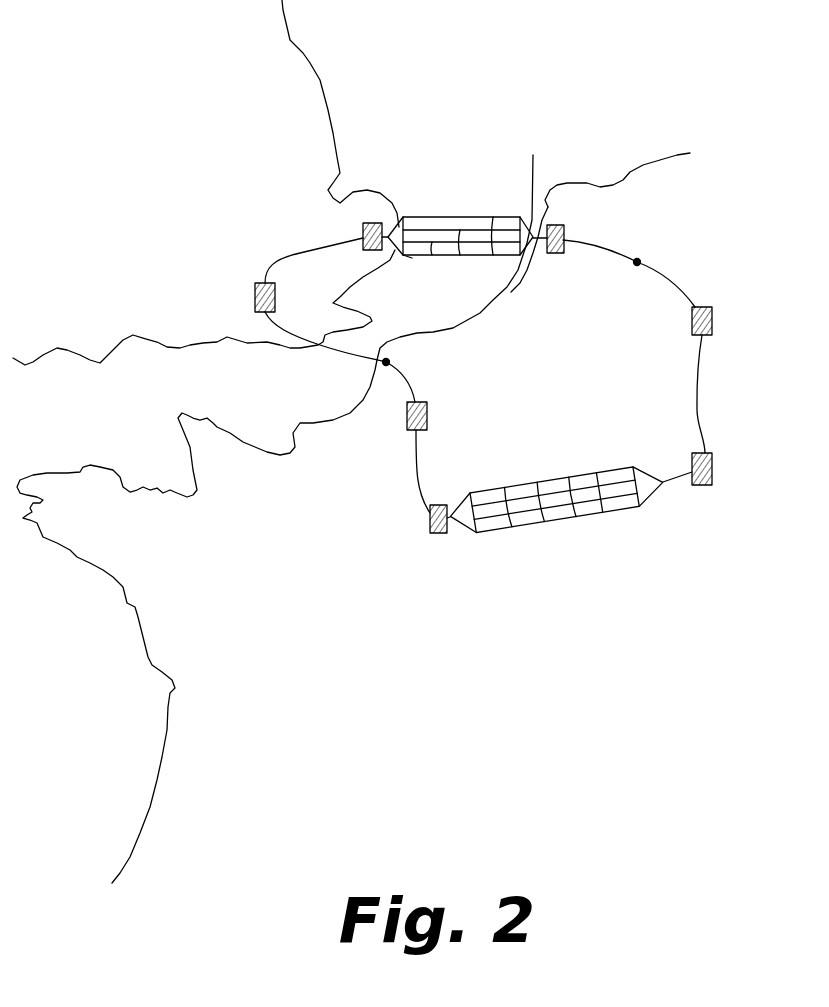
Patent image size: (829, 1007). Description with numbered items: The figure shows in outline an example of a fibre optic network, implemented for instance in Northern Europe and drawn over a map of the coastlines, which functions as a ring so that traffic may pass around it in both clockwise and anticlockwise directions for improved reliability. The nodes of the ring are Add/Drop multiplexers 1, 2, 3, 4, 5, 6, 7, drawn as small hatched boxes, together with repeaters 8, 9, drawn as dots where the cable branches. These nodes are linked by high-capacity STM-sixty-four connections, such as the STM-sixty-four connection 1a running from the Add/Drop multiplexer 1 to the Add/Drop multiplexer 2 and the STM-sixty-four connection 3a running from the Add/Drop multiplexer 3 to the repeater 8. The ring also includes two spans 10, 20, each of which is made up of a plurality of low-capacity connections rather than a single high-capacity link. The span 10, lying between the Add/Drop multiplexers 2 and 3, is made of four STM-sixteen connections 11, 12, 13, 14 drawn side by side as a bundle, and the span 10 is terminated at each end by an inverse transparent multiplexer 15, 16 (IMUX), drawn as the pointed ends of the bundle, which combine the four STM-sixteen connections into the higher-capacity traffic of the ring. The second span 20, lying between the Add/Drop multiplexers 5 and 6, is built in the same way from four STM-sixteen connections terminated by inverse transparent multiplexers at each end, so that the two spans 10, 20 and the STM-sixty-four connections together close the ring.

The add/drop multiplexer 1 is at (255, 292).
The STM-64 connection 1a is at (330, 247).
The add/drop multiplexer 2 is at (373, 223).
The add/drop multiplexer 3 is at (555, 225).
The STM-64 connection 3a is at (617, 250).
The add/drop multiplexer 4 is at (707, 307).
The add/drop multiplexer 5 is at (712, 462).
The add/drop multiplexer 6 is at (437, 537).
The add/drop multiplexer 7 is at (408, 420).
The repeater 8 is at (637, 262).
The repeater 9 is at (390, 361).
The span 10 is at (520, 198).
The STM-16 connection 11 is at (411, 258).
The STM-16 connection 12 is at (432, 256).
The STM-16 connection 13 is at (460, 256).
The STM-16 connection 14 is at (493, 256).
The inverse transparent multiplexer 15 is at (390, 230).
The inverse transparent multiplexer 16 is at (275, 362).
The span 20 is at (557, 514).